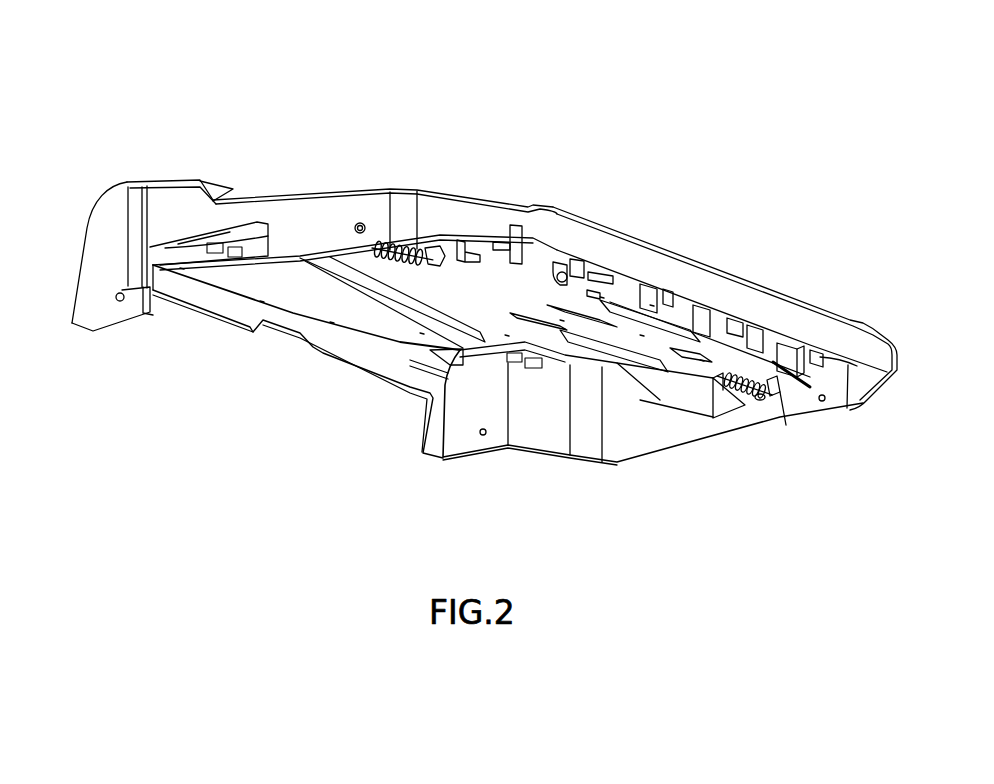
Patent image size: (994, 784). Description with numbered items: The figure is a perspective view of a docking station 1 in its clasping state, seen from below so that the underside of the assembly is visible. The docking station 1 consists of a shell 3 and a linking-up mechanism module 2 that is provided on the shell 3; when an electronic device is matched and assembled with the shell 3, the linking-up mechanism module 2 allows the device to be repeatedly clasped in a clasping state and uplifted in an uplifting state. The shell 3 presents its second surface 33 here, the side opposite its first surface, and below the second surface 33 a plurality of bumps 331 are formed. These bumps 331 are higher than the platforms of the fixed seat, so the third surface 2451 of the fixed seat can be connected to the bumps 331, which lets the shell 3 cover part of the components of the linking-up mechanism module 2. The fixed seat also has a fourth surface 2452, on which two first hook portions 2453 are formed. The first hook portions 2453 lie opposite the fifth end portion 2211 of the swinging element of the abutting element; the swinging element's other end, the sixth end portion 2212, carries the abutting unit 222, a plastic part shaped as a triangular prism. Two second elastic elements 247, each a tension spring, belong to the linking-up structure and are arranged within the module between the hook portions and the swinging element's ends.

The docking station 1 is at (290, 33).
The linking-up mechanism module 2 is at (674, 396).
The shell 3 is at (613, 245).
The second surface 33 is at (325, 262).
The bumps 331 is at (574, 259).
The abutting unit 222 is at (800, 363).
The second elastic elements 247 is at (388, 260).
The fifth end portion 2211 is at (718, 375).
The sixth end portion 2212 is at (782, 387).
The third surface 2451 is at (672, 325).
The fourth surface 2452 is at (622, 333).
The first hook portions 2453 is at (427, 260).